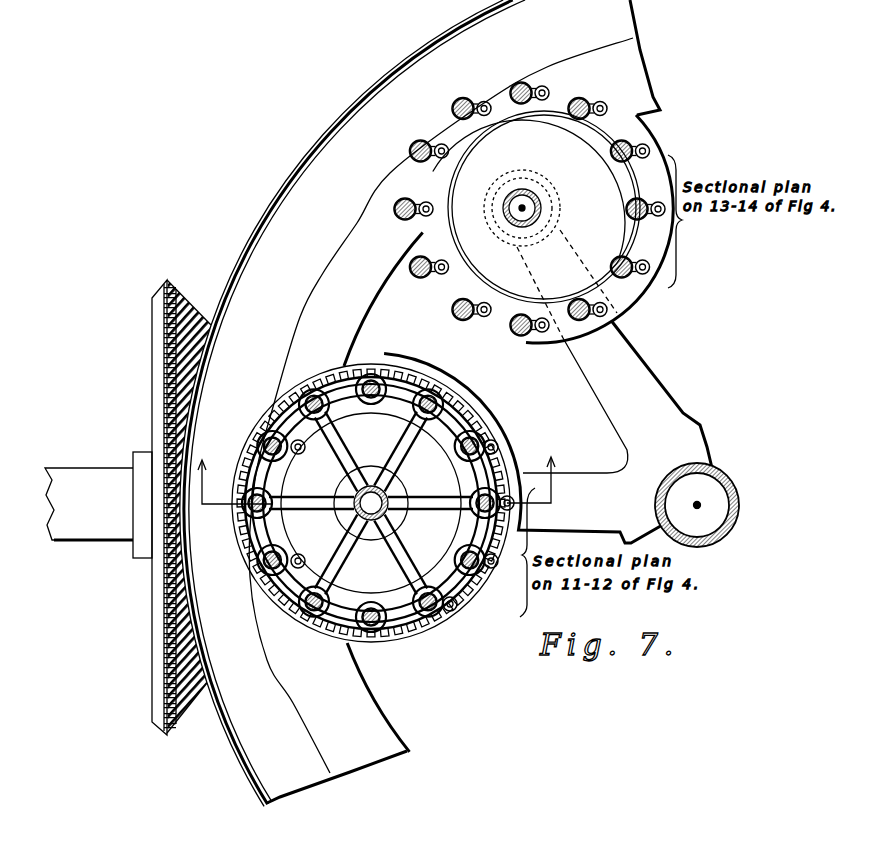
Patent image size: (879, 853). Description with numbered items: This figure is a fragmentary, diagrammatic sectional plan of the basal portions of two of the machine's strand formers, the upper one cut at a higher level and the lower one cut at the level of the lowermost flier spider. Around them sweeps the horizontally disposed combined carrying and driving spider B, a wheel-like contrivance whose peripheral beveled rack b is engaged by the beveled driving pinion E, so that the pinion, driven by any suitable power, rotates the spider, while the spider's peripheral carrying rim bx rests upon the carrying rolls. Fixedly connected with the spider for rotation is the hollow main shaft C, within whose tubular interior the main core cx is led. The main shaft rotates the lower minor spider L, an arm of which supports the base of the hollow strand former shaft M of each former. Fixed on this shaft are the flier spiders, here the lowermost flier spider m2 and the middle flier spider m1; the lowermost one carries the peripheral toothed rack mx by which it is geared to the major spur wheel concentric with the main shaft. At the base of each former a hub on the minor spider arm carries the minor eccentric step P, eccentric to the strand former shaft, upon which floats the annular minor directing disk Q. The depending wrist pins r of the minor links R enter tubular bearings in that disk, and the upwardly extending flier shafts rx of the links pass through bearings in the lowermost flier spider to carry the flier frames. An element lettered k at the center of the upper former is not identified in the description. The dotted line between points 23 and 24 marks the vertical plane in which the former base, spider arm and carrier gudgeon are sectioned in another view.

The combined carrying and driving spider B is at (668, 95).
The peripheral beveled rack b is at (341, 403).
The peripheral carrying rim bx is at (441, 405).
The beveled driving pinion E is at (152, 632).
The minor eccentric step P is at (531, 335).
The minor directing disk Q is at (480, 144).
The minor link R is at (583, 100).
The depending wrist pin r is at (545, 88).
The flier shaft rx is at (521, 84).
The eccentric hub k is at (526, 196).
The strand former shaft M is at (538, 202).
The lower minor spider L is at (604, 352).
The lowermost flier spider m2 is at (361, 425).
The middle flier spider m1 is at (382, 555).
The peripheral toothed rack mx is at (394, 637).
The main shaft C is at (705, 505).
The main core cx is at (699, 503).
The dotted section line 23 is at (234, 491).
The dotted section line 24 is at (537, 488).